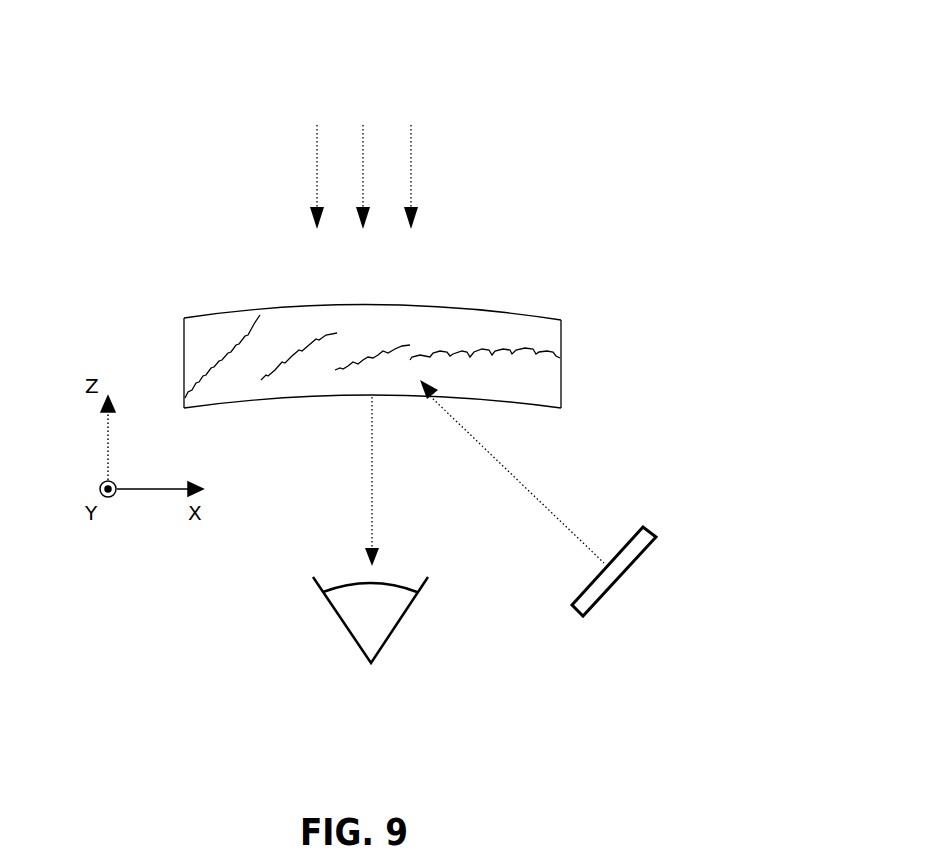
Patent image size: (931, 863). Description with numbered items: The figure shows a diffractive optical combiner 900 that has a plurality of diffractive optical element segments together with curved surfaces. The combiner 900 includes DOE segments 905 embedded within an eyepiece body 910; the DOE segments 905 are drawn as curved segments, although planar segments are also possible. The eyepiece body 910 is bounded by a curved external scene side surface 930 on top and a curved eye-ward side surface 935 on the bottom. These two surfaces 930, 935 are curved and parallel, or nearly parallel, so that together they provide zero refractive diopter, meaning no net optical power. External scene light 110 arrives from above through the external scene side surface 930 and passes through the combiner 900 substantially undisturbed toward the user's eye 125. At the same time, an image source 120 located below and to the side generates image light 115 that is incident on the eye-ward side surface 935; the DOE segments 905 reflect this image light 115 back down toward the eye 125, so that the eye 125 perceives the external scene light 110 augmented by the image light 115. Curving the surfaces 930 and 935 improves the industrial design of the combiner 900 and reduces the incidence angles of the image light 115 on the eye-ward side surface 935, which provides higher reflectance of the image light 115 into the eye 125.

The external scene light 110 is at (411, 160).
The image light 115 is at (563, 522).
The image source 120 is at (651, 531).
The eye 125 is at (387, 621).
The diffractive optical combiner 900 is at (626, 193).
The DOE segments 905 is at (247, 326).
The eyepiece body 910 is at (184, 348).
The curved external scene side surface 930 is at (528, 297).
The curved eye-ward side surface 935 is at (533, 420).